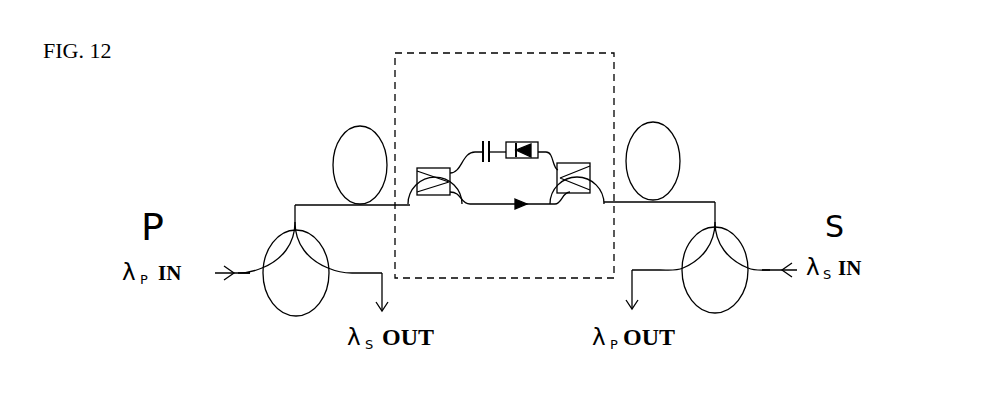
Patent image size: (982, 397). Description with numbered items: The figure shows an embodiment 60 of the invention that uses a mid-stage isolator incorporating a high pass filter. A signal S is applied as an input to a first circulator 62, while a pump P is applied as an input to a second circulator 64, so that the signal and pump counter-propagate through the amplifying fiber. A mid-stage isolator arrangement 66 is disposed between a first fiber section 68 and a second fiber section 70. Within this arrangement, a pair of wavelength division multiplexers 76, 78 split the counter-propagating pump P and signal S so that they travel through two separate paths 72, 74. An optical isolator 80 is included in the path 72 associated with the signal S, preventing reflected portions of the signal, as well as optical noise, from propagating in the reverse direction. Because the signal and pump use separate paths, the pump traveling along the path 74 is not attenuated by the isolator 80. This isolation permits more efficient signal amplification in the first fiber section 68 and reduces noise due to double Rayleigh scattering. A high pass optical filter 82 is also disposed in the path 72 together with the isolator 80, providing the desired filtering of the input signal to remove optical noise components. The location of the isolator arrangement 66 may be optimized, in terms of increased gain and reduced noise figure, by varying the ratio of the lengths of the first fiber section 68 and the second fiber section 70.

The embodiment 60 is at (65, 146).
The first circulator 62 is at (735, 243).
The second circulator 64 is at (272, 248).
The mid-stage isolator arrangement 66 is at (503, 285).
The first fiber section 68 is at (677, 147).
The second fiber section 70 is at (335, 152).
The path 72 is at (548, 165).
The path 74 is at (476, 206).
The wavelength division multiplexer 76 is at (575, 205).
The wavelength division multiplexer 78 is at (421, 208).
The optical isolator 80 is at (543, 141).
The high pass optical filter 82 is at (470, 140).